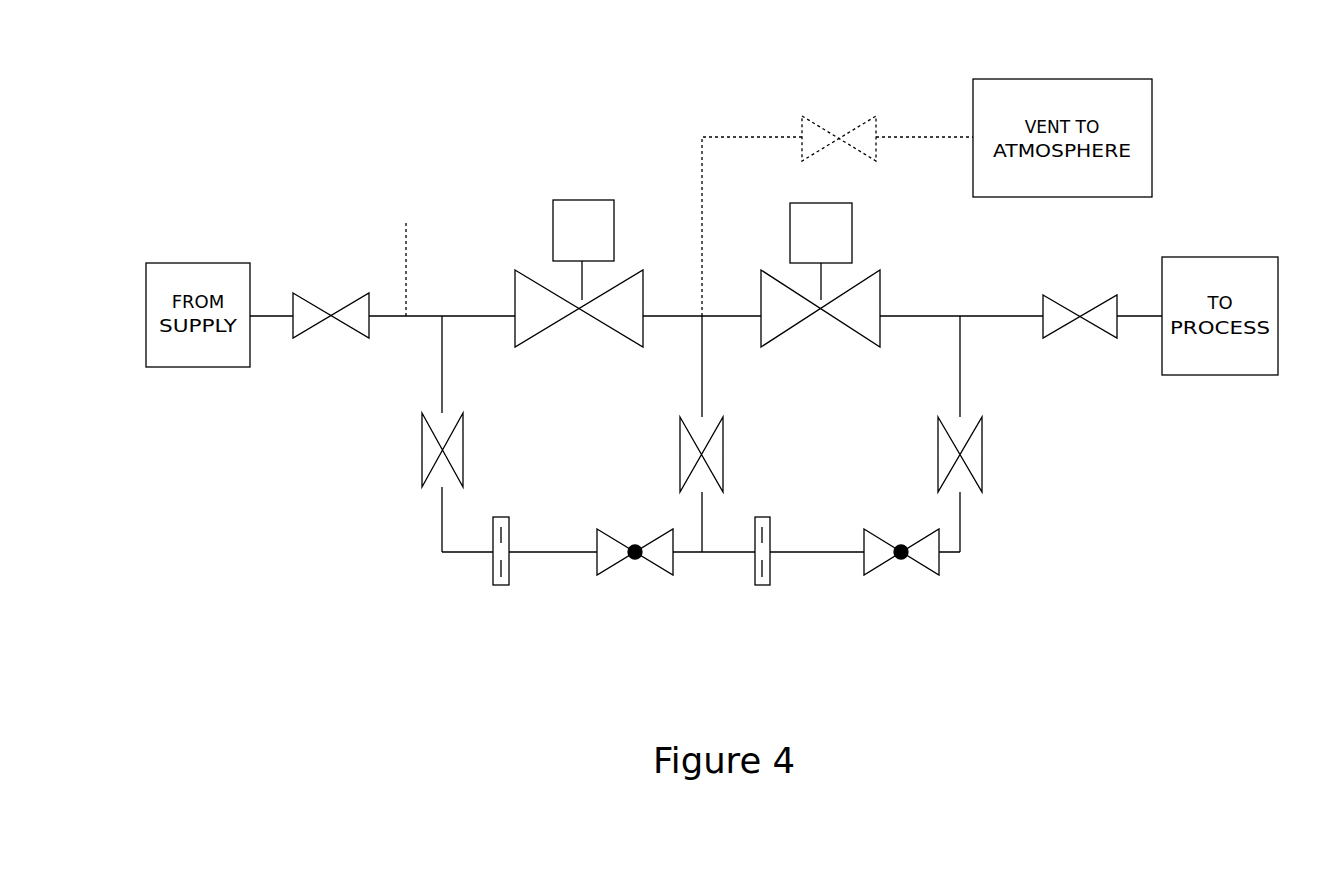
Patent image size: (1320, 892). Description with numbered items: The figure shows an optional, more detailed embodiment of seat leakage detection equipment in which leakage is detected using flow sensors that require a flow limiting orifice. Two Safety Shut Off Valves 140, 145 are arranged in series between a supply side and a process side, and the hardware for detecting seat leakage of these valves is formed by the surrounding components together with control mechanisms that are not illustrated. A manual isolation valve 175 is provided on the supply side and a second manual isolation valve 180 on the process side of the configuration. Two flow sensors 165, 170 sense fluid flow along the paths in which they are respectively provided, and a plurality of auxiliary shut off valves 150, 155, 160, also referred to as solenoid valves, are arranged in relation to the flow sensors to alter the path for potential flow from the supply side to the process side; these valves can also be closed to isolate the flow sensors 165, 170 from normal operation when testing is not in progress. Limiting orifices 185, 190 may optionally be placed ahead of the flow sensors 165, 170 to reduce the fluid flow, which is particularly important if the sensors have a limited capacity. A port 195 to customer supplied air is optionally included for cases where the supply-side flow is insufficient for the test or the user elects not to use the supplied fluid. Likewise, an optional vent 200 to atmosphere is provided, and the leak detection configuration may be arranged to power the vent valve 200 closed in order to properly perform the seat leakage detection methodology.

The Safety Shut Off Valve 140 is at (515, 270).
The Safety Shut Off Valve 145 is at (880, 270).
The auxiliary shut off valve 150 is at (422, 487).
The auxiliary shut off valve 155 is at (683, 420).
The auxiliary shut off valve 160 is at (978, 420).
The flow sensor 165 is at (597, 575).
The flow sensor 170 is at (864, 575).
The manual isolation valve 175 is at (360, 336).
The manual isolation valve 180 is at (1043, 292).
The limiting orifice 185 is at (493, 585).
The limiting orifice 190 is at (755, 585).
The port to customer supplied air 195 is at (406, 226).
The vent to atmosphere 200 is at (876, 118).